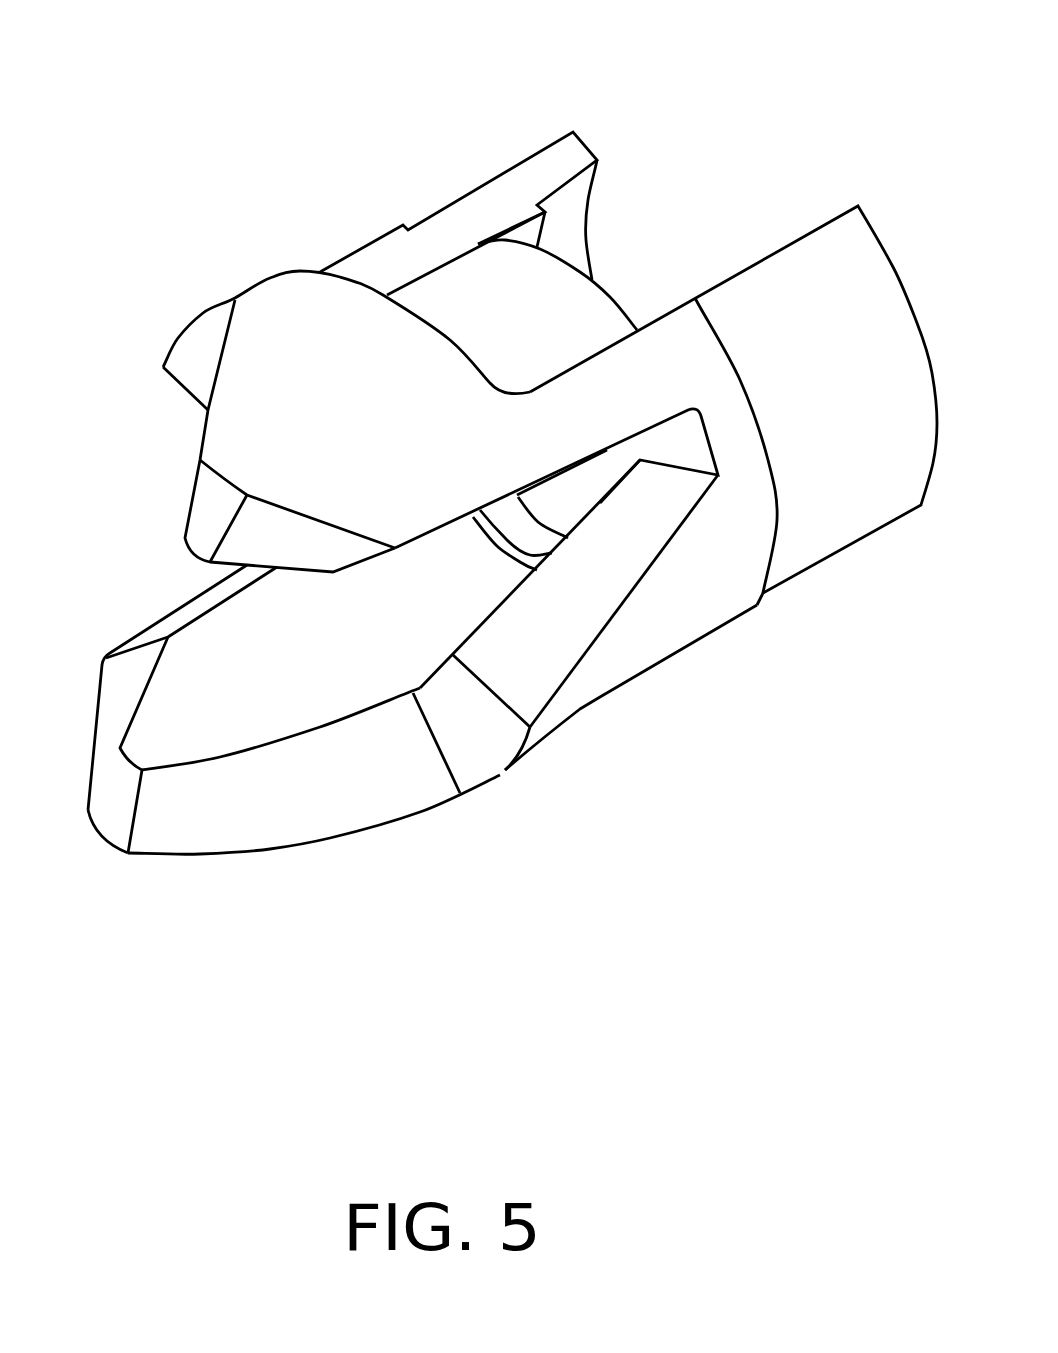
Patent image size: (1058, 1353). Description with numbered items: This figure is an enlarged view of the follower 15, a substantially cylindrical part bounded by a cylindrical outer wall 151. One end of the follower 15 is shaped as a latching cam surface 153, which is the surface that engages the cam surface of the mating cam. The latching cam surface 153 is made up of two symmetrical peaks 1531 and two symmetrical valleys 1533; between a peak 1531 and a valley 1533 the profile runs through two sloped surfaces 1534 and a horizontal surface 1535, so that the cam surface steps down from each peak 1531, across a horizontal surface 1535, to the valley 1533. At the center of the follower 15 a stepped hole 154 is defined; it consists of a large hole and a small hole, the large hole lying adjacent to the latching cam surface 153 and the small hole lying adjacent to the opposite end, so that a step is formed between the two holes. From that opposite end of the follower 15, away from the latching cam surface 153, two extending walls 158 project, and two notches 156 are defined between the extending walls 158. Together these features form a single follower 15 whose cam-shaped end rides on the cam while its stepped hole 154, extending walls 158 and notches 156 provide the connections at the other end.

The follower 15 is at (427, 147).
The cylindrical outer wall 151 is at (267, 328).
The latching cam surface 153 is at (668, 958).
The peak 1531 is at (117, 808).
The valley 1533 is at (675, 443).
The sloped surface 1534 is at (343, 767).
The horizontal surface 1535 is at (487, 740).
The stepped hole 154 is at (600, 463).
The notch 156 is at (553, 283).
The extending wall 158 is at (798, 270).